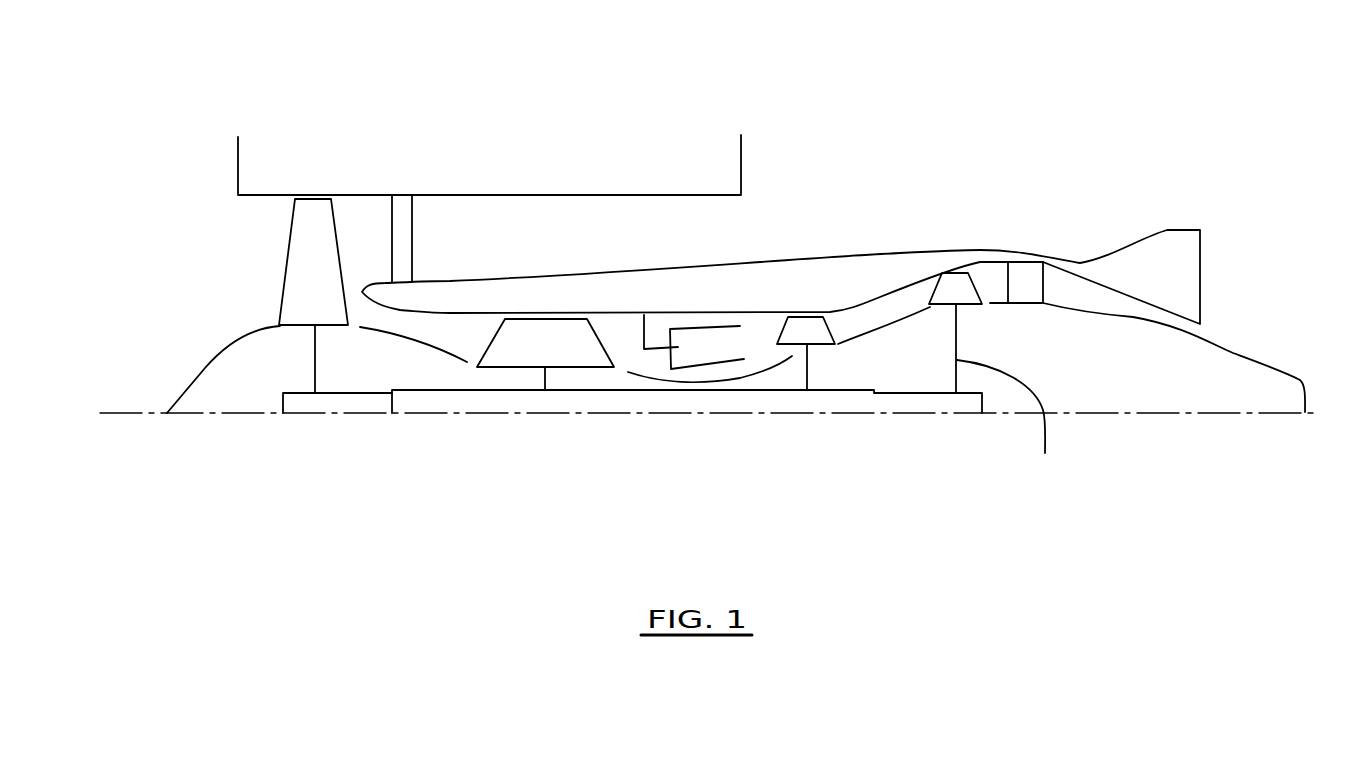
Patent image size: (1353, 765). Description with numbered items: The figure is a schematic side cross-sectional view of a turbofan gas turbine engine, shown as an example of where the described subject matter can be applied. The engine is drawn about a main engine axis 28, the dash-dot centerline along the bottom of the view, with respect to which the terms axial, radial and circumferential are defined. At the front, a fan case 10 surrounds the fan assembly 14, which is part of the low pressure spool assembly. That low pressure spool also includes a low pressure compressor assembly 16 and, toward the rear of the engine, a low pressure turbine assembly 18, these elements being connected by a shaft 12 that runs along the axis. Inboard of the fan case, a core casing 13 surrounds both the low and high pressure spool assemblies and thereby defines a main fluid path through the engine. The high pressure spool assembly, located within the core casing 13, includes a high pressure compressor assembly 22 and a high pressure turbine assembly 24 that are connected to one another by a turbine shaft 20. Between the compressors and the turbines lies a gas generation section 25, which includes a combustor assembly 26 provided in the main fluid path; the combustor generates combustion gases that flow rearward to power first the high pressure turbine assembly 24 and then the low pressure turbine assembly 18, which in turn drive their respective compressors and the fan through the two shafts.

The fan case 10 is at (577, 195).
The shaft 12 is at (303, 405).
The core casing 13 is at (802, 258).
The fan assembly 14 is at (310, 217).
The low pressure compressor assembly 16 is at (372, 358).
The low pressure turbine assembly 18 is at (949, 383).
The turbine shaft 20 is at (743, 402).
The high pressure compressor assembly 22 is at (527, 355).
The high pressure turbine assembly 24 is at (819, 338).
The gas generation section 25 is at (678, 377).
The combustor assembly 26 is at (697, 350).
The main engine axis 28 is at (132, 413).